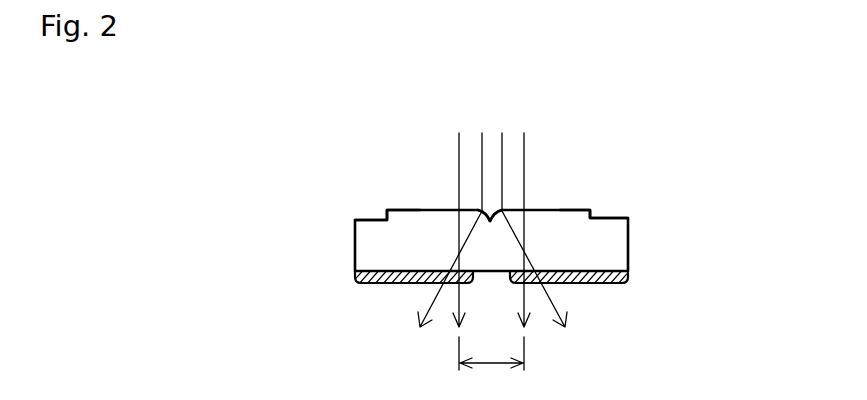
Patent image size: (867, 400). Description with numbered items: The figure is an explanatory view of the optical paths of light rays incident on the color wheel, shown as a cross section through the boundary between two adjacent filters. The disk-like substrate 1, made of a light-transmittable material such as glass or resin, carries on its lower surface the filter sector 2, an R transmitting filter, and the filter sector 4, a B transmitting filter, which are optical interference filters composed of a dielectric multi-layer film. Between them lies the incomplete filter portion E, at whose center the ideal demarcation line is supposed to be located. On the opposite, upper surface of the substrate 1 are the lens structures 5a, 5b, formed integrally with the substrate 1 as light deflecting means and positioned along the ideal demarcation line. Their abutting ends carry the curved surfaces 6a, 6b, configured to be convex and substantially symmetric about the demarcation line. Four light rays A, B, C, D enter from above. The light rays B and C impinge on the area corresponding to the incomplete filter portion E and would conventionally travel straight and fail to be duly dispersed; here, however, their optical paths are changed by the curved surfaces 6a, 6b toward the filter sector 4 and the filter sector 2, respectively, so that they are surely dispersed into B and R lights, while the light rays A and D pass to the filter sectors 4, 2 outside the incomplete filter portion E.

The substrate 1 is at (631, 239).
The filter sector 2 is at (582, 285).
The filter sector 4 is at (395, 285).
The lens structure 5a is at (410, 213).
The lens structure 5b is at (575, 213).
The curved surface 6a is at (486, 212).
The curved surface 6b is at (498, 212).
The light ray A is at (459, 219).
The light ray B is at (453, 219).
The light ray C is at (531, 219).
The light ray D is at (525, 219).
The incomplete filter portion E is at (491, 349).